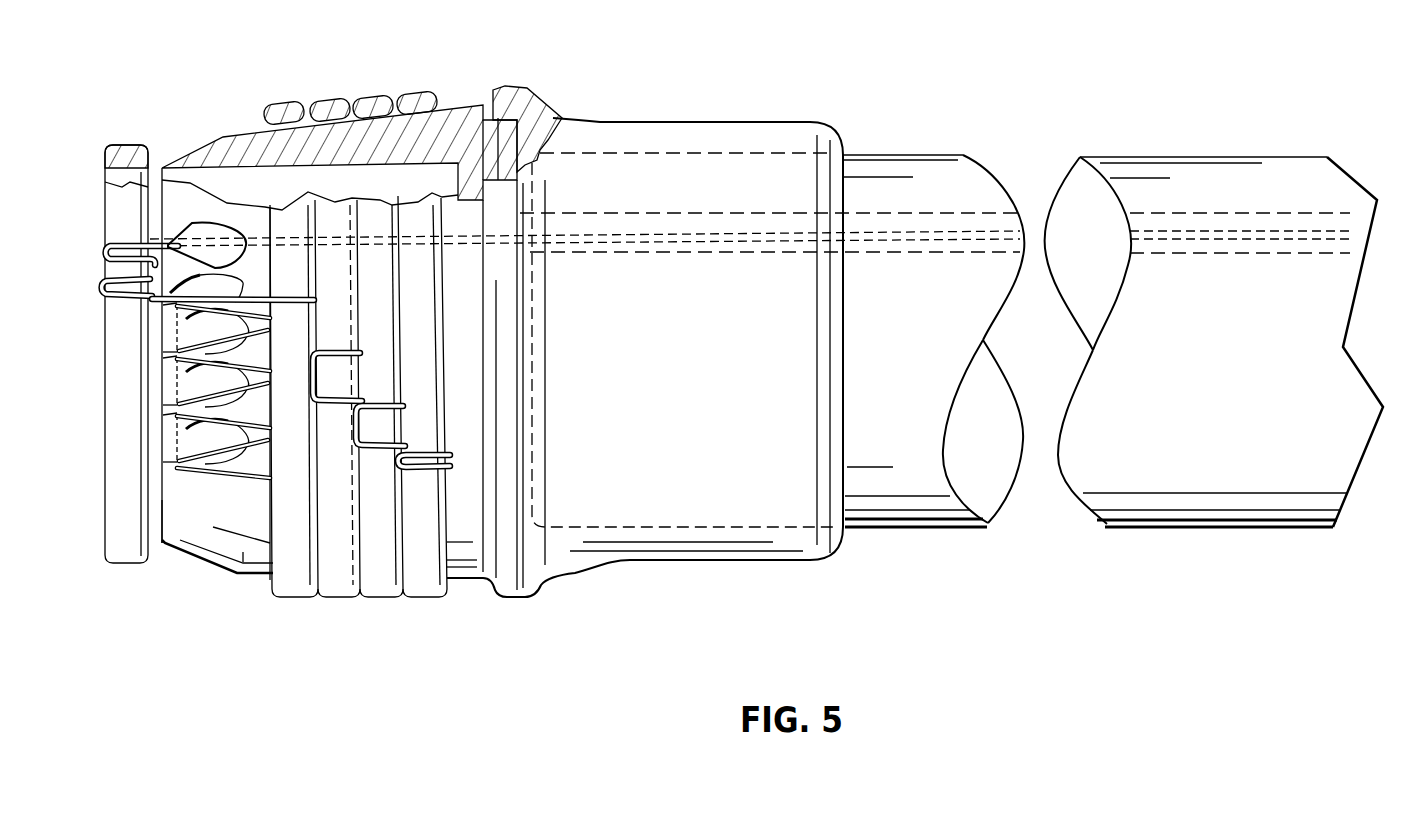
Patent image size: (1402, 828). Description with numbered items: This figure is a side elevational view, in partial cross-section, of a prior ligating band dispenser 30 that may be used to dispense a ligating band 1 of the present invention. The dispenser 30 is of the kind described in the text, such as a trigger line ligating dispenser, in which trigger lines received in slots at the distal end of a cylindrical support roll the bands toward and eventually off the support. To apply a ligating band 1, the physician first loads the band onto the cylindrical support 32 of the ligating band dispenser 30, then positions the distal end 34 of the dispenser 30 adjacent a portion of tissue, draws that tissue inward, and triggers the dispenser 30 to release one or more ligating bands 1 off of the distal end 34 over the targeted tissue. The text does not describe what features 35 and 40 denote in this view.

The ligating band 1 is at (130, 146).
The ligating band dispenser 30 is at (672, 127).
The cylindrical support 32 is at (240, 552).
The distal end 34 is at (160, 523).
The spring contact housing 35 is at (210, 282).
The cable sheath 40 is at (960, 172).